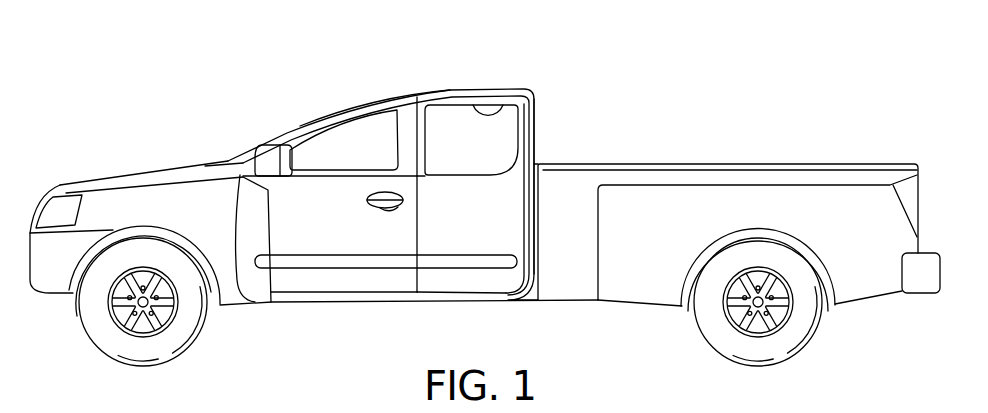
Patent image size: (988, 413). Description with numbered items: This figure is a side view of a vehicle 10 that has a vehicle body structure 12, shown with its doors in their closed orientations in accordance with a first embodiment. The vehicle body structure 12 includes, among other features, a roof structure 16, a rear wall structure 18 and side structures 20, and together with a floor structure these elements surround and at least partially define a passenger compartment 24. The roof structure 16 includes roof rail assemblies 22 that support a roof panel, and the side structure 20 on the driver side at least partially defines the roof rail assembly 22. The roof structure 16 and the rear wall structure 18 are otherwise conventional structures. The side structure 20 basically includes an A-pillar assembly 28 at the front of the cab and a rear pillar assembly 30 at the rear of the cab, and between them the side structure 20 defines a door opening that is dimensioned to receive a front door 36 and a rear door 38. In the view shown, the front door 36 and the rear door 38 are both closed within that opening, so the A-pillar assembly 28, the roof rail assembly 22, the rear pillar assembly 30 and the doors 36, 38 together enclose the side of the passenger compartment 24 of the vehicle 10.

The vehicle 10 is at (541, 50).
The vehicle body structure 12 is at (374, 96).
The roof structure 16 is at (450, 91).
The rear wall structure 18 is at (536, 110).
The side structure 20 is at (531, 210).
The roof rail assembly 22 is at (503, 103).
The passenger compartment 24 is at (341, 149).
The A-pillar assembly 28 is at (285, 143).
The rear pillar assembly 30 is at (530, 138).
The front door 36 is at (343, 278).
The rear door 38 is at (465, 270).